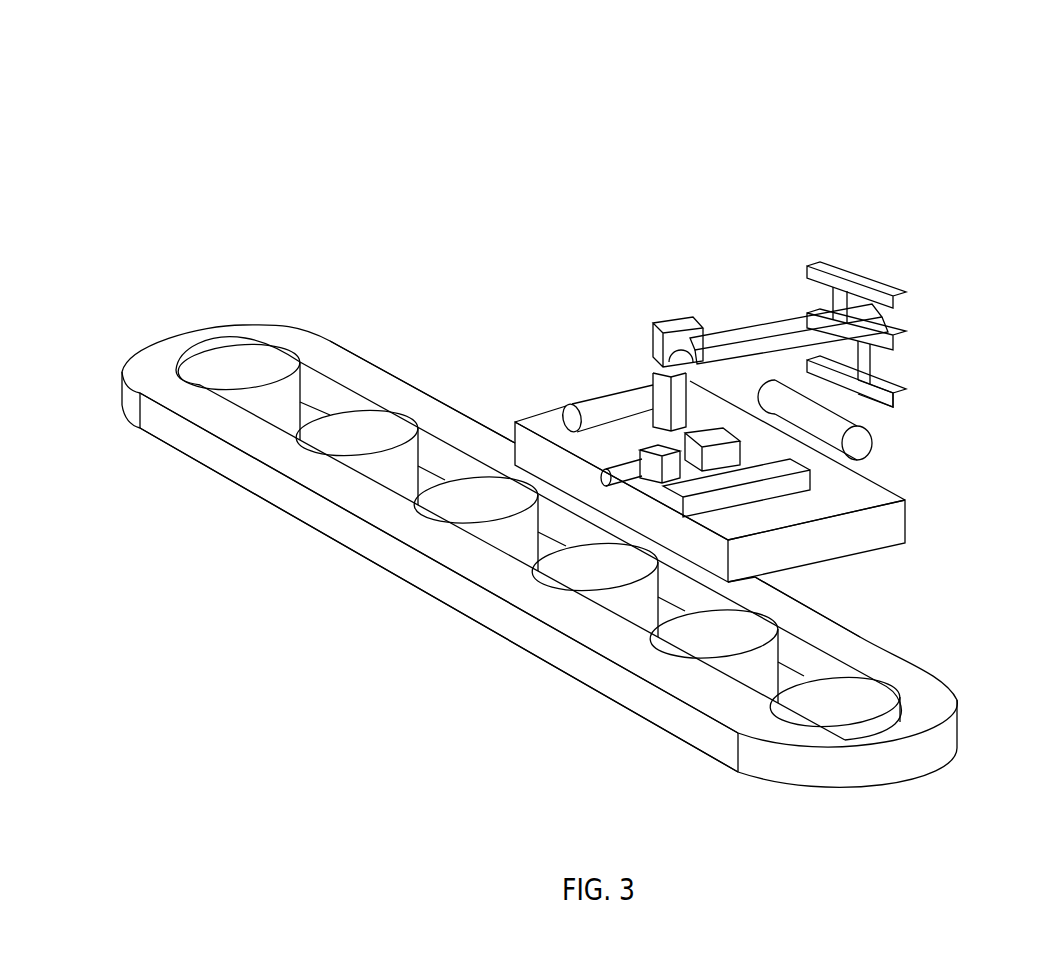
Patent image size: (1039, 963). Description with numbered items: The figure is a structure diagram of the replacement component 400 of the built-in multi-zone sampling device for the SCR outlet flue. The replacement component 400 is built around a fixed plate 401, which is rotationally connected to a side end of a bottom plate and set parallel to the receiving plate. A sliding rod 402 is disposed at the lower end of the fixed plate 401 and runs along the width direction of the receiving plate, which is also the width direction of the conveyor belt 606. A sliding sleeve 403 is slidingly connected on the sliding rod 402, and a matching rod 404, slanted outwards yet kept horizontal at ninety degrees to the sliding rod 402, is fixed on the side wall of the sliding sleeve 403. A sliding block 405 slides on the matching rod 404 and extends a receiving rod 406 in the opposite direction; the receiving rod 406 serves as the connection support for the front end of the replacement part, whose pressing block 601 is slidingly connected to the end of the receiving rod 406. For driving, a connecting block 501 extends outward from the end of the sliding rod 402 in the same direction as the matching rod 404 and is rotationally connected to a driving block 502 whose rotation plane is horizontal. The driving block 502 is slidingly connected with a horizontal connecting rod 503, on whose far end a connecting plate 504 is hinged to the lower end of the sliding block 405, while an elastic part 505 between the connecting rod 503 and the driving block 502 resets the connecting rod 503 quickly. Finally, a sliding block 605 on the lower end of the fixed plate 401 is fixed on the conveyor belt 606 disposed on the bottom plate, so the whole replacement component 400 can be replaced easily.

The replacement component 400 is at (558, 220).
The fixed plate 401 is at (731, 565).
The sliding rod 402 is at (867, 462).
The sliding sleeve 403 is at (748, 380).
The matching rod 404 is at (592, 407).
The sliding block 405 is at (684, 315).
The receiving rod 406 is at (784, 335).
The connecting block 501 is at (907, 545).
The driving block 502 is at (648, 428).
The connecting rod 503 is at (603, 467).
The connecting plate 504 is at (757, 488).
The elastic part 505 is at (733, 575).
The pressing block 601 is at (893, 400).
The sliding block 605 is at (745, 575).
The conveyor belt 606 is at (327, 485).